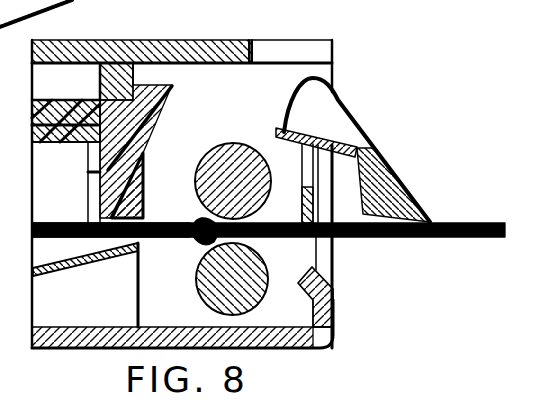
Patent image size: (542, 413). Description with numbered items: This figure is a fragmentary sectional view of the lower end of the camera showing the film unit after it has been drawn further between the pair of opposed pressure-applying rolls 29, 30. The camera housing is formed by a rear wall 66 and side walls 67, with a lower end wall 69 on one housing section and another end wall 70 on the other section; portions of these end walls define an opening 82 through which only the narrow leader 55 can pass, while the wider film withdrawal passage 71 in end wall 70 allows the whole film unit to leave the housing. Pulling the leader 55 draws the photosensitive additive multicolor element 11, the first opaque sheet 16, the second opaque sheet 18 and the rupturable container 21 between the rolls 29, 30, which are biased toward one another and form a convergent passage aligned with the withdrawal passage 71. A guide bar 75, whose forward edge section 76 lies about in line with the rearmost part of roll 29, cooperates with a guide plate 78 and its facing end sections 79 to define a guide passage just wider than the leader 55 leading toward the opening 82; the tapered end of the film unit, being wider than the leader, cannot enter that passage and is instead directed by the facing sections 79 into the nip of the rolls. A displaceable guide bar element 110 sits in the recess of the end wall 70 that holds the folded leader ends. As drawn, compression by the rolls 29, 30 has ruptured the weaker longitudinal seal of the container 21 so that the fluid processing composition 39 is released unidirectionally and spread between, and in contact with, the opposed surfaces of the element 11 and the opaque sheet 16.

The leader 55 is at (53, 13).
The end wall 69 is at (195, 42).
The side walls 67 is at (254, 104).
The guide plate 78 is at (162, 112).
The facing end sections 79 is at (143, 206).
The pressure-applying roll 29 is at (222, 145).
The pressure-applying roll 30 is at (262, 262).
The opening 82 is at (330, 74).
The displaceable guide bar element 110 is at (340, 127).
The photosensitive additive multicolor element 11 is at (62, 222).
The first opaque sheet 16 is at (76, 221).
The second opaque sheet 18 is at (74, 238).
The fluid processing composition 39 is at (200, 240).
The rupturable container 21 is at (396, 238).
The film withdrawal passage 71 is at (333, 257).
The end wall 70 is at (333, 318).
The rear wall 66 is at (288, 349).
The guide bar 75 is at (72, 265).
The forward edge section of guide bar 76 is at (139, 245).